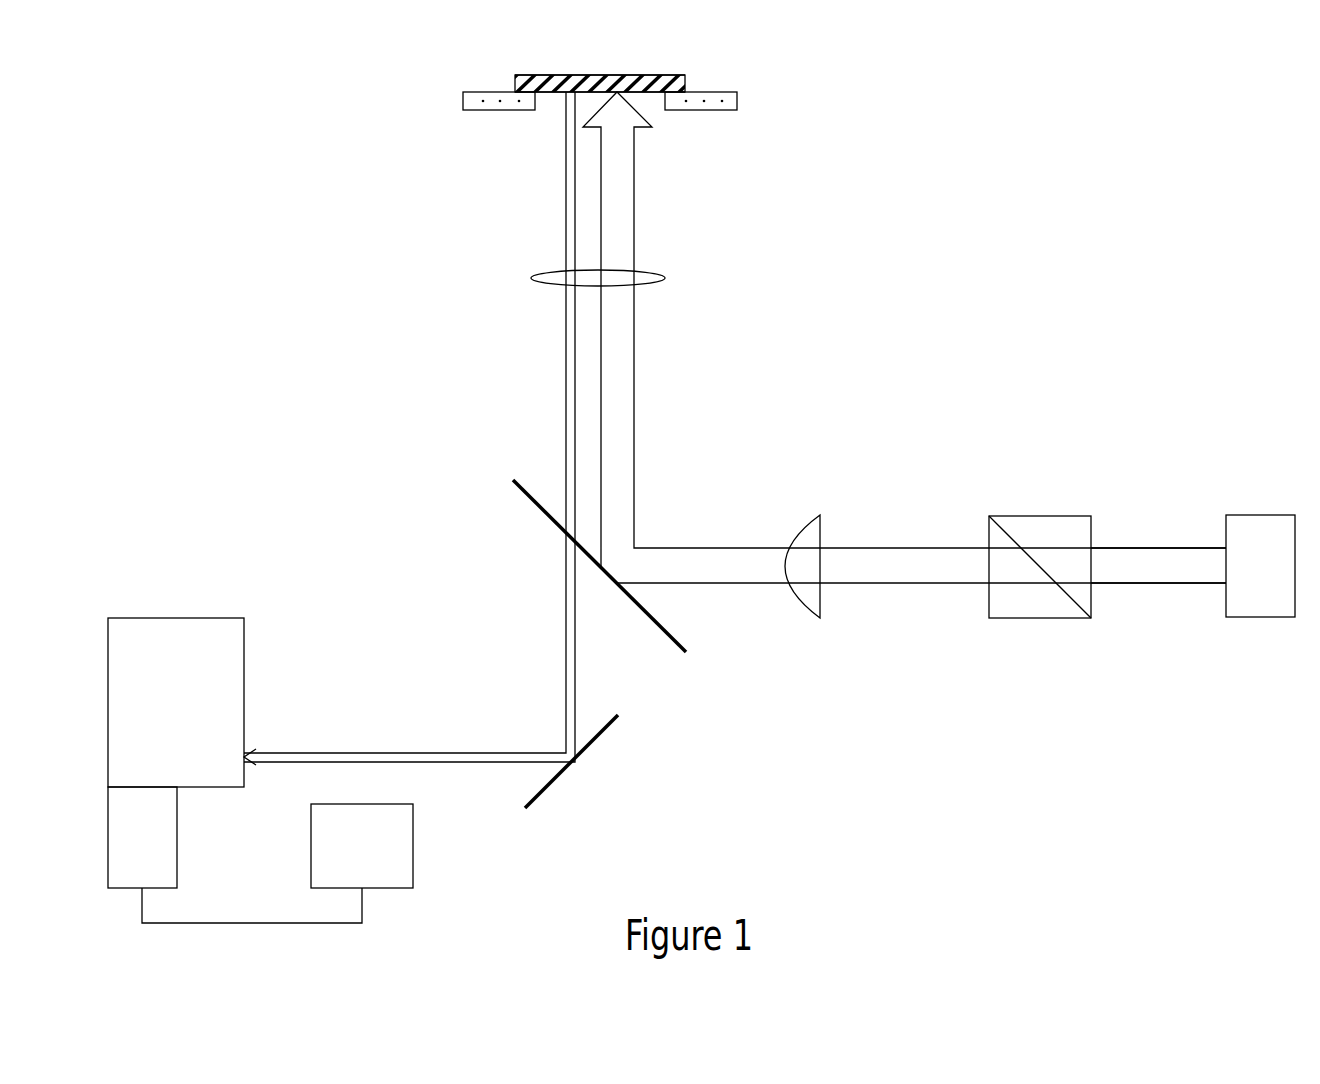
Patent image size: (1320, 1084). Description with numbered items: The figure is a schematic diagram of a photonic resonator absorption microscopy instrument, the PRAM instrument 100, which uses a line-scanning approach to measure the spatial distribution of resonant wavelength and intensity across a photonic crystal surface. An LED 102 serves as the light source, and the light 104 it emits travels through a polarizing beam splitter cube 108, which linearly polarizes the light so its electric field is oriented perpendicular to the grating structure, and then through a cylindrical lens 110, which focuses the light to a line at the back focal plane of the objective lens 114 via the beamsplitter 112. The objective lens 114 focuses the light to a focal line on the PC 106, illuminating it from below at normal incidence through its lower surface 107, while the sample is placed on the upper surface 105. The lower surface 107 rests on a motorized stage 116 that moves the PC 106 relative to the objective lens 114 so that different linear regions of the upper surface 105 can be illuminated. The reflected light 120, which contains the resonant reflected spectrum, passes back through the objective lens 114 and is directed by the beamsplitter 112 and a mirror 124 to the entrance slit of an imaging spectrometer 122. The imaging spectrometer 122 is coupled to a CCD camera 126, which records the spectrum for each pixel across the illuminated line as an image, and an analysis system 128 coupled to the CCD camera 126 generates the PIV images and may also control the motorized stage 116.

The PRAM instrument 100 is at (1115, 780).
The LED 102 is at (1274, 580).
The light 104 is at (1140, 549).
The upper surface 105 is at (537, 75).
The PC 106 is at (678, 76).
The lower surface 107 is at (558, 92).
The polarizing beam splitter cube 108 is at (1040, 516).
The cylindrical lens 110 is at (820, 515).
The beamsplitter 112 is at (540, 508).
The objective lens 114 is at (665, 278).
The motorized stage 116 is at (703, 110).
The reflected light 120 is at (565, 198).
The imaging spectrometer 122 is at (190, 716).
The mirror 124 is at (548, 790).
The CCD camera 126 is at (155, 853).
The analysis system 128 is at (375, 856).